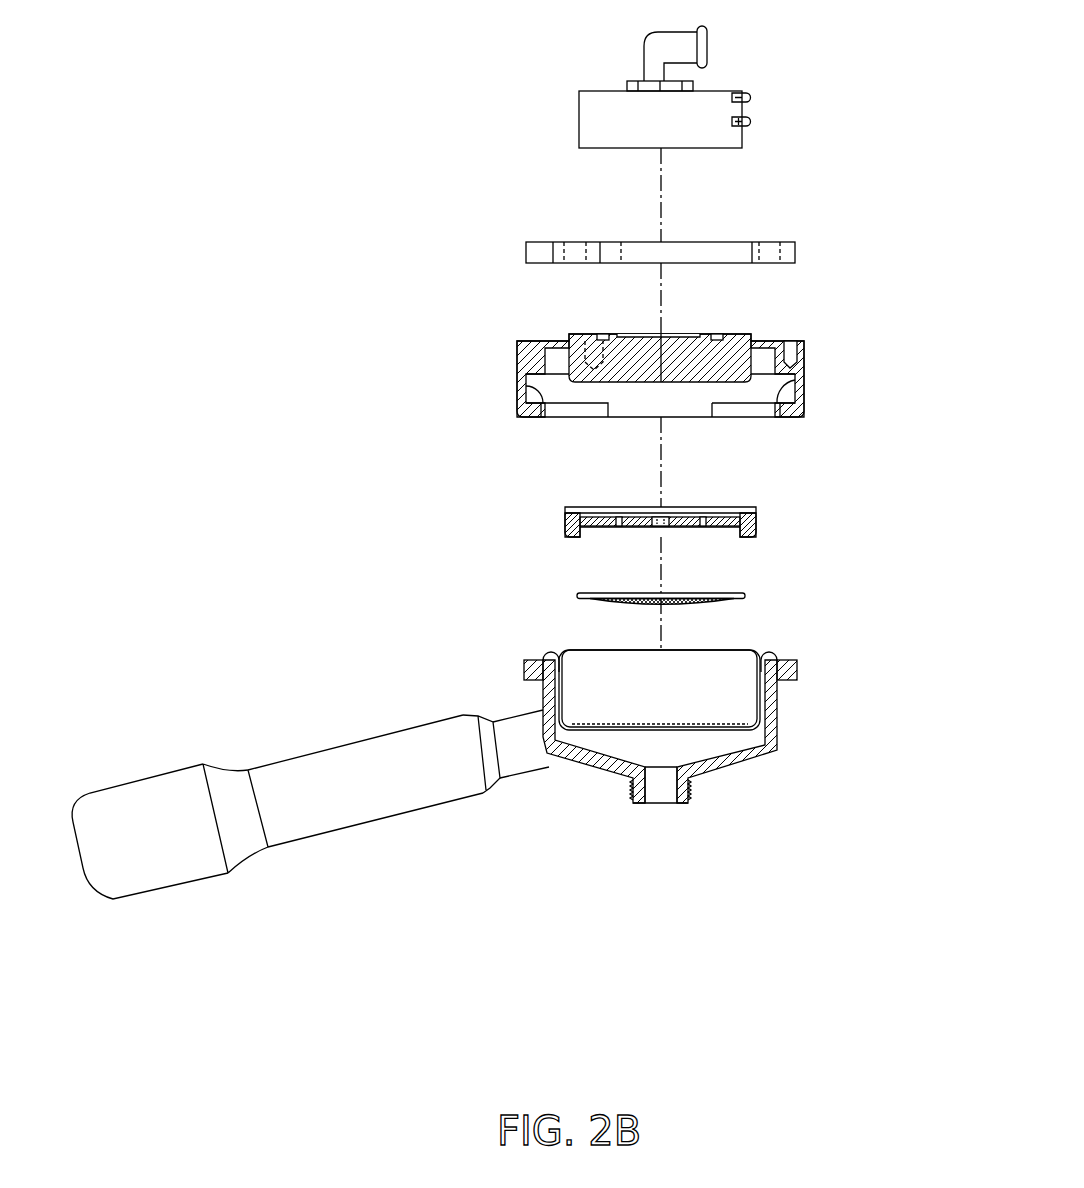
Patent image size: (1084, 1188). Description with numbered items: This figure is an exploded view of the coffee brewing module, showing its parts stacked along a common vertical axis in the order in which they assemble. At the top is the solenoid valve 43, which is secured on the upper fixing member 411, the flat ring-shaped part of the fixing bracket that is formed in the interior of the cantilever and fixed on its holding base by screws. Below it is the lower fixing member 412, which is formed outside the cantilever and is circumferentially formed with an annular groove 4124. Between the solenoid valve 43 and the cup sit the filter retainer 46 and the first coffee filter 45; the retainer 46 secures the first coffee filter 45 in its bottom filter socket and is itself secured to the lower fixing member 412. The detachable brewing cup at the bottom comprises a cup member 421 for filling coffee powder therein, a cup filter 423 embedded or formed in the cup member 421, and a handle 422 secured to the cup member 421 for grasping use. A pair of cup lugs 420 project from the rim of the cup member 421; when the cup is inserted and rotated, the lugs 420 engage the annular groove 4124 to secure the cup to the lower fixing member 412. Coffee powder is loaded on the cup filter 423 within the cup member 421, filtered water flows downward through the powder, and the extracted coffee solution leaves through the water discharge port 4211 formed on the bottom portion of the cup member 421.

The solenoid valve 43 is at (603, 107).
The upper fixing member 411 is at (530, 253).
The lower fixing member 412 is at (517, 353).
The annular groove 4124 is at (540, 412).
The filter retainer 46 is at (752, 510).
The first coffee filter 45 is at (578, 597).
The cup lugs 420 is at (524, 664).
The cup member 421 is at (655, 736).
The handle 422 is at (347, 753).
The cup filter 423 is at (712, 732).
The water discharge port 4211 is at (657, 790).